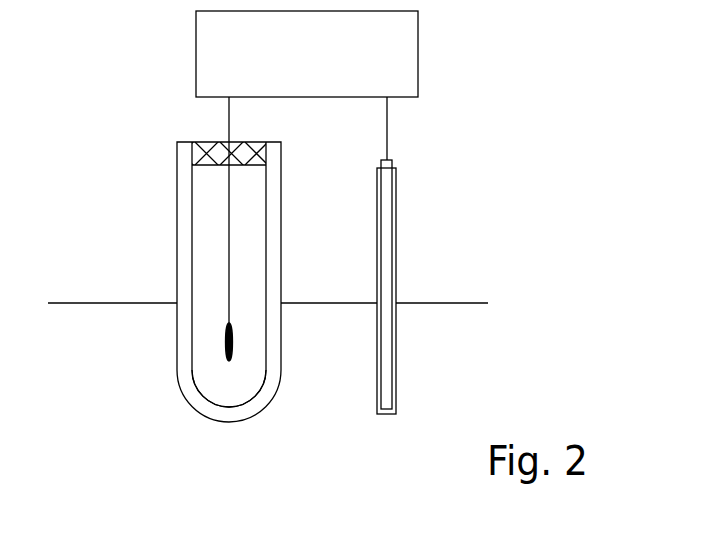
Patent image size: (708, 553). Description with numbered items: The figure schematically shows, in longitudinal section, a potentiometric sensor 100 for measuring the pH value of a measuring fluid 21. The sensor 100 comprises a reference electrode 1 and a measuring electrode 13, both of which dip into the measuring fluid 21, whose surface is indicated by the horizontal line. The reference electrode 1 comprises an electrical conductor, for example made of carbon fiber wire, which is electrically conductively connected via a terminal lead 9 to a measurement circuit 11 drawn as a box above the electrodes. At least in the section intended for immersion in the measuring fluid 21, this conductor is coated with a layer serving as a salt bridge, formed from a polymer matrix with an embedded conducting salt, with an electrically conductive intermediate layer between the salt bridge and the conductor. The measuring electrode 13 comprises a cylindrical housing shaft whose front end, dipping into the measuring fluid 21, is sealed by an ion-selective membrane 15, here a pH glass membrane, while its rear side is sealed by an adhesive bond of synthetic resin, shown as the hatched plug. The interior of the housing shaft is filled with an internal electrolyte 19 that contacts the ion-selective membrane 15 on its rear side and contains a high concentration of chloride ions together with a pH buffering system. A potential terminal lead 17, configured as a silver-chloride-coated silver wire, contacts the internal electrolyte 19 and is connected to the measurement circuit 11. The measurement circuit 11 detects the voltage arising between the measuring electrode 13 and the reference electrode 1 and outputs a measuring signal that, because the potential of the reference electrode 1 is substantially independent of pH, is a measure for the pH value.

The potentiometric sensor 100 is at (530, 117).
The measurement circuit 11 is at (323, 63).
The measuring fluid 21 is at (488, 303).
The measuring electrode 13 is at (177, 220).
The ion-selective membrane 15 is at (196, 403).
The potential terminal lead 17 is at (229, 260).
The internal electrolyte 19 is at (207, 340).
The reference electrode 1 is at (385, 248).
The terminal lead 9 is at (388, 125).